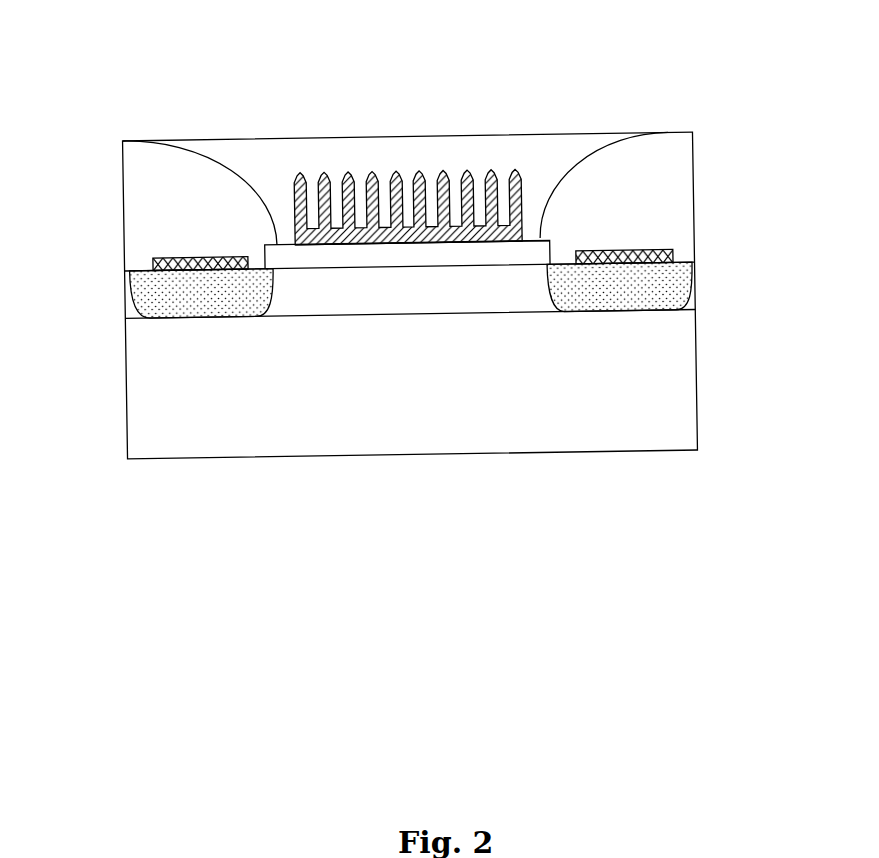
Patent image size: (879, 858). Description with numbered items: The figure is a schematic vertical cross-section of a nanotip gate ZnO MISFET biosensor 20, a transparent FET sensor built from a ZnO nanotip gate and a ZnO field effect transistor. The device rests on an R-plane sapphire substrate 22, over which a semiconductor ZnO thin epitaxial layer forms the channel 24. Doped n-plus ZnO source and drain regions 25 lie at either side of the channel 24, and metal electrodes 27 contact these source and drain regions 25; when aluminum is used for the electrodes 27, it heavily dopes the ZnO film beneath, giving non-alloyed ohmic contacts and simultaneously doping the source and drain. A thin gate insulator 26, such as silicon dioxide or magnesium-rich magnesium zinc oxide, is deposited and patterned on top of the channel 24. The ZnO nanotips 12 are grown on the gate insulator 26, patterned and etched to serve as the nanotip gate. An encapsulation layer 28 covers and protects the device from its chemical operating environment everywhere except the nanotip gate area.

The nanotip gate ZnO MISFET biosensor 20 is at (373, 79).
The ZnO nanotips 12 is at (440, 168).
The R-plane sapphire substrate 22 is at (370, 457).
The channel 24 is at (360, 288).
The source and drain regions 25 is at (165, 297).
The gate insulator 26 is at (520, 250).
The metal electrodes 27 is at (157, 260).
The encapsulation layer 28 is at (143, 173).